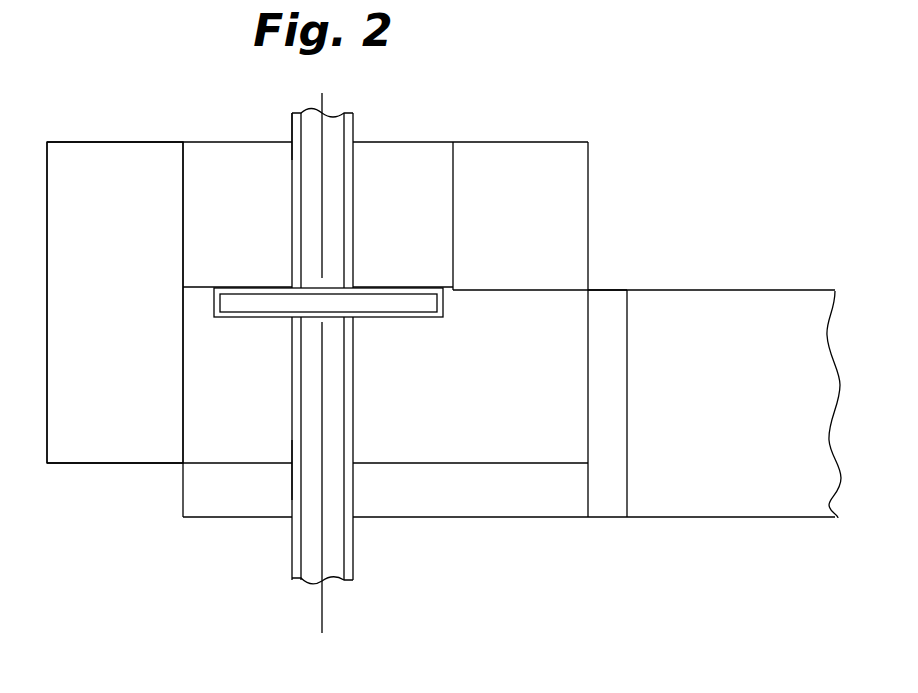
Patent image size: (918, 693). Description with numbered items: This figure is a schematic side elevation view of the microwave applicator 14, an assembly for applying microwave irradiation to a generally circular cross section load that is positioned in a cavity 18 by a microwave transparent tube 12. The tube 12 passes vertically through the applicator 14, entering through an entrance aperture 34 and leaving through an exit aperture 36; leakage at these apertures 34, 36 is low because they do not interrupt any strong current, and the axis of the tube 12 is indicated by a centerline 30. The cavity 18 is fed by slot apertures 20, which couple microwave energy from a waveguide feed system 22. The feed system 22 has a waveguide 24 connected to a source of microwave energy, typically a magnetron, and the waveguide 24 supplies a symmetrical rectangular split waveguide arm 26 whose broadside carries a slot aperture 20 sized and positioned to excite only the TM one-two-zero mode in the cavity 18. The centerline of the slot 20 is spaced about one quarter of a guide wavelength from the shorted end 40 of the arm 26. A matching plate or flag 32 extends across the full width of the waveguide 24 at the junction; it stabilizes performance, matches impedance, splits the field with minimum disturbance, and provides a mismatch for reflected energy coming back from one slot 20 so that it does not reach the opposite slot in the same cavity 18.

The microwave transparent tube 12 is at (355, 128).
The applicator 14 is at (120, 142).
The cavity 18 is at (102, 332).
The slot apertures 20 is at (435, 318).
The waveguide feed system 22 is at (610, 272).
The waveguide 24 is at (757, 290).
The split waveguide arm 26 is at (436, 518).
The shaft axis 30 is at (322, 612).
The matching plate or flag 32 is at (627, 415).
The entrance aperture 34 is at (292, 131).
The exit aperture 36 is at (288, 467).
The shorted end 40 is at (183, 357).